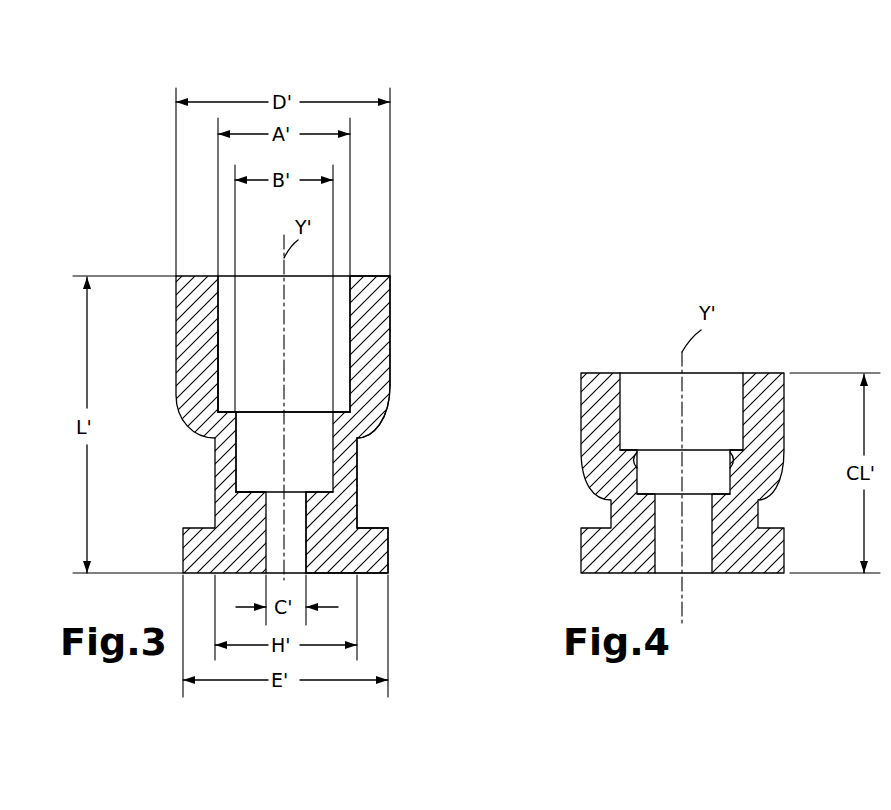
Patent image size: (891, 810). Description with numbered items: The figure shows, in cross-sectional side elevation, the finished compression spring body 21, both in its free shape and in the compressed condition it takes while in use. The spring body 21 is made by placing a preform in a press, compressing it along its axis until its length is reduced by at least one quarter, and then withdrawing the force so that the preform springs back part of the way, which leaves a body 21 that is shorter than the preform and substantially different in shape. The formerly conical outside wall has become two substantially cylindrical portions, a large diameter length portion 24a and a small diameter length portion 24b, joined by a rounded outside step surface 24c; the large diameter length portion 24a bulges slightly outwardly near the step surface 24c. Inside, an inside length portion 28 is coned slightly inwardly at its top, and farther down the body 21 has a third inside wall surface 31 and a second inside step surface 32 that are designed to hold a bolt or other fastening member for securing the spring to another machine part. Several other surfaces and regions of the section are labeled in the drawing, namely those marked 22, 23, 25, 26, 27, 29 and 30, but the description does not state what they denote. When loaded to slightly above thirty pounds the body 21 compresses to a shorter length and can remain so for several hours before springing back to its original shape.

In FIG. 3, the compression spring body 21 is at (402, 252).
In FIG. 4, the compression spring body 21 is at (770, 359).
In FIG. 3, the upper bore 22 is at (271, 322).
In FIG. 3, the bore side wall 23 is at (352, 330).
In FIG. 3, the large diameter length portion 24a is at (393, 375).
In FIG. 3, the small diameter length portion 24b is at (360, 487).
In FIG. 3, the rounded outside step surface 24c is at (380, 428).
In FIG. 3, the top face 25 is at (372, 305).
In FIG. 3, the flange 26 is at (375, 552).
In FIG. 3, the flange upper face 27 is at (378, 530).
In FIG. 3, the inside length portion 28 is at (222, 357).
In FIG. 3, the intermediate cavity 29 is at (262, 450).
In FIG. 3, the bore bottom shoulder 30 is at (226, 410).
In FIG. 3, the third inside wall surface 31 is at (303, 517).
In FIG. 3, the second inside step surface 32 is at (248, 492).